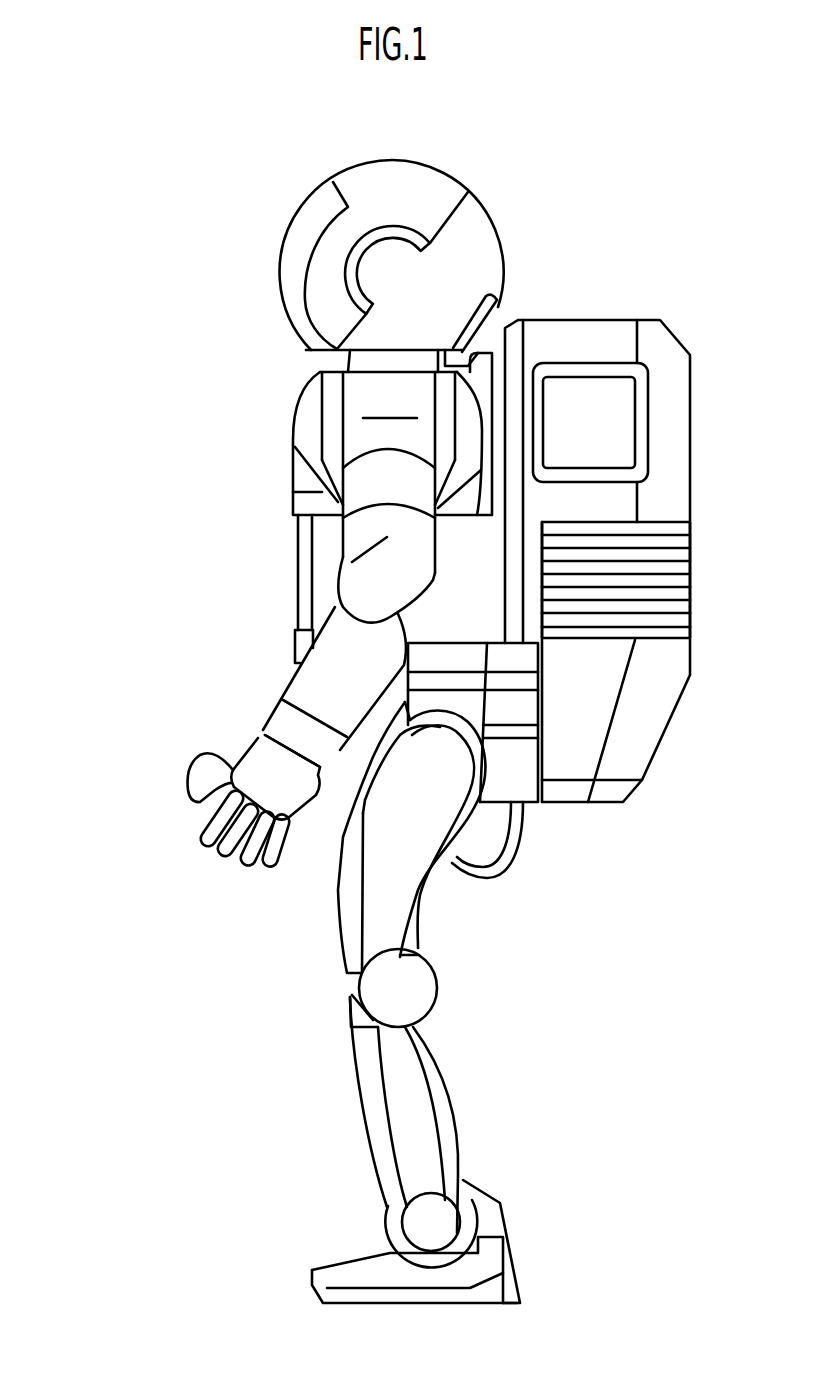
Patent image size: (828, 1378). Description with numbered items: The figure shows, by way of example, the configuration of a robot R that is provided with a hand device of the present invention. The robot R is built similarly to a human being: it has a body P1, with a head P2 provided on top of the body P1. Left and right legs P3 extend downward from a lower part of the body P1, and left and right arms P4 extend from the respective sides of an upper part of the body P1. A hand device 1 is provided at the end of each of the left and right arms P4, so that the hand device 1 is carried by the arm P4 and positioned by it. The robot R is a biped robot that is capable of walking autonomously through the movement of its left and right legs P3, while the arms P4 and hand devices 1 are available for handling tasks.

The robot R is at (132, 204).
The body P1 is at (293, 467).
The head P2 is at (282, 277).
The leg P3 is at (460, 1097).
The arm P4 is at (290, 680).
The hand device 1 is at (176, 822).